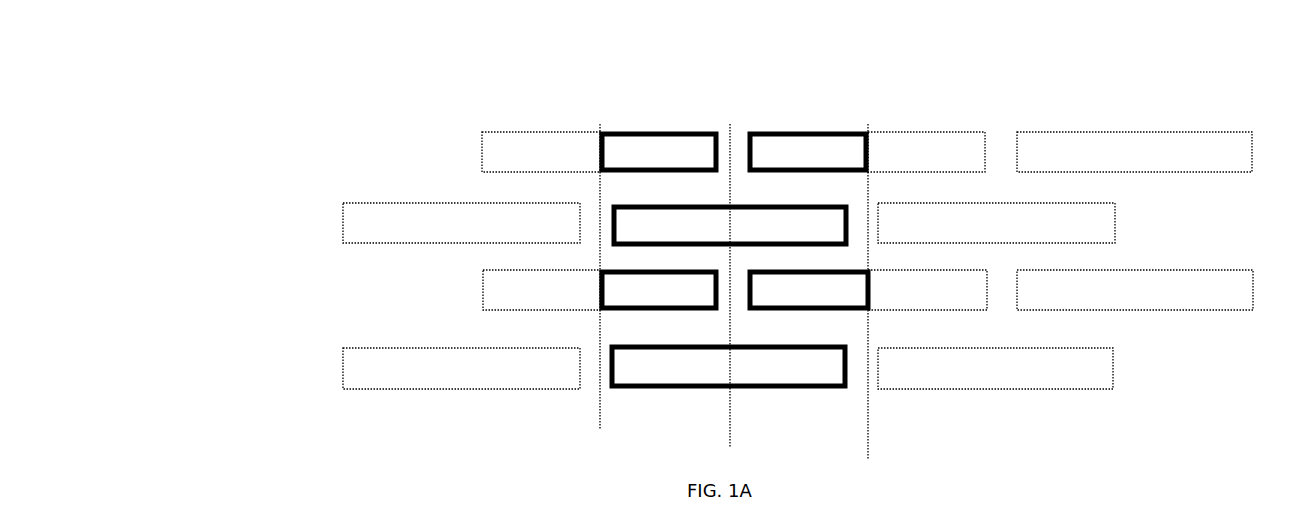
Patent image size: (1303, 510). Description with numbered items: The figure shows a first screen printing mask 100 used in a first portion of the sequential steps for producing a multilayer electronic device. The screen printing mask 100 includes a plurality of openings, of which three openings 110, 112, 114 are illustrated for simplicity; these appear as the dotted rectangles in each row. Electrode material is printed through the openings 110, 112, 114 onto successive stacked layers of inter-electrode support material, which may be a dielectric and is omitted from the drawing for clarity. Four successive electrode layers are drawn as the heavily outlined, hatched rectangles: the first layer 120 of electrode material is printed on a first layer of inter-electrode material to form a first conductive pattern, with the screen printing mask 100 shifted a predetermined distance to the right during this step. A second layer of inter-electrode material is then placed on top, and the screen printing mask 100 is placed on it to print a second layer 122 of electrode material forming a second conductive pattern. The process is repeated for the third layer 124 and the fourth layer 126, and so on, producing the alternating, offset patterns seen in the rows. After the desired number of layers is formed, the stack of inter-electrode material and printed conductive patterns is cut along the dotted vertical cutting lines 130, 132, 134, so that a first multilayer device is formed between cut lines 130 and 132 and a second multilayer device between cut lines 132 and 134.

The first screen printing mask 100 is at (410, 98).
The opening 110 is at (573, 130).
The opening 112 is at (930, 130).
The opening 114 is at (1133, 130).
The first layer of electrode material 120 is at (258, 153).
The second layer of electrode material 122 is at (258, 222).
The third layer 124 is at (258, 288).
The fourth layer 126 is at (258, 357).
The cutting line 130 is at (600, 408).
The cutting line 132 is at (730, 408).
The cutting line 134 is at (866, 408).